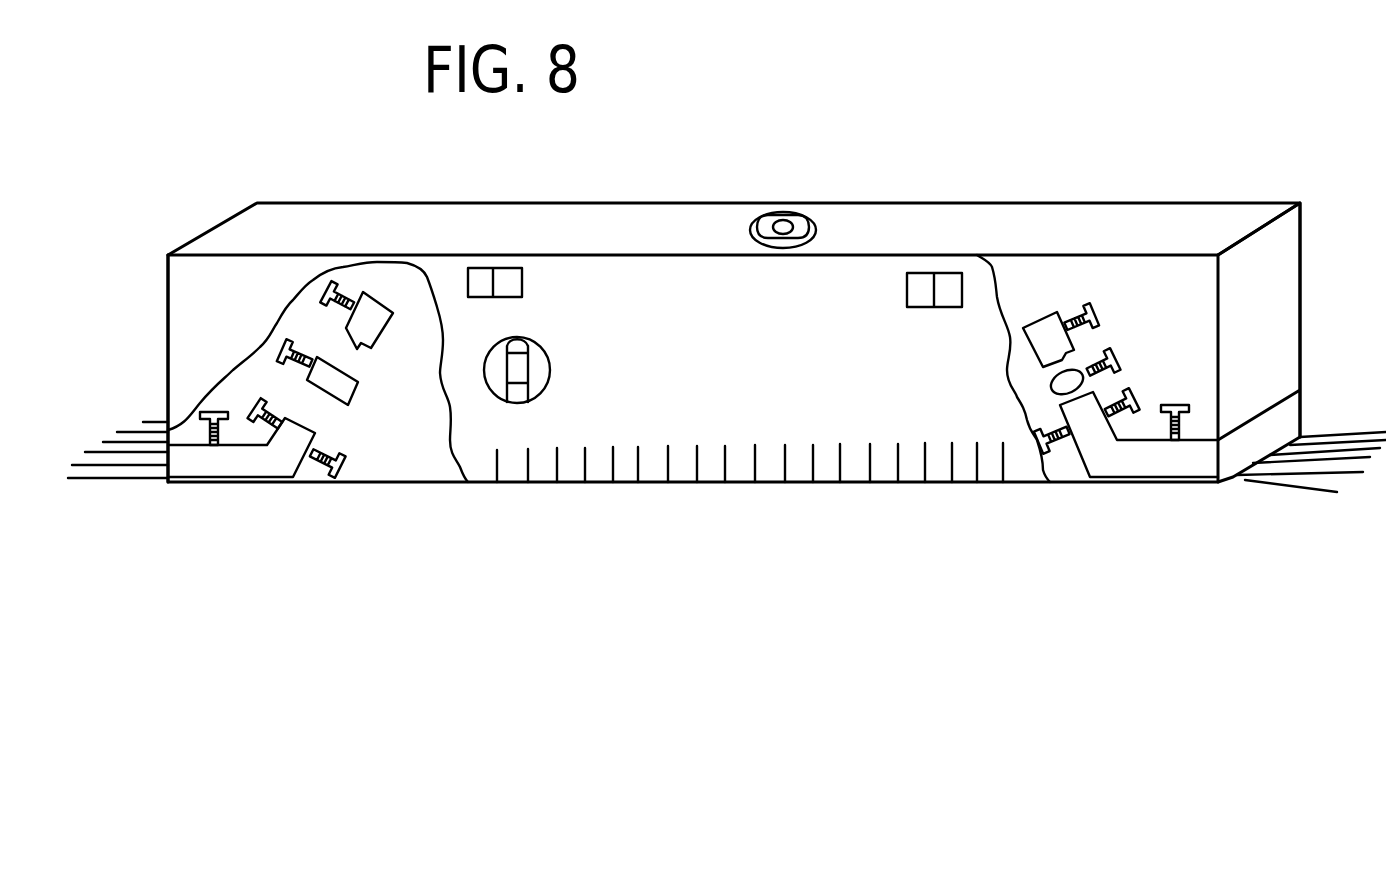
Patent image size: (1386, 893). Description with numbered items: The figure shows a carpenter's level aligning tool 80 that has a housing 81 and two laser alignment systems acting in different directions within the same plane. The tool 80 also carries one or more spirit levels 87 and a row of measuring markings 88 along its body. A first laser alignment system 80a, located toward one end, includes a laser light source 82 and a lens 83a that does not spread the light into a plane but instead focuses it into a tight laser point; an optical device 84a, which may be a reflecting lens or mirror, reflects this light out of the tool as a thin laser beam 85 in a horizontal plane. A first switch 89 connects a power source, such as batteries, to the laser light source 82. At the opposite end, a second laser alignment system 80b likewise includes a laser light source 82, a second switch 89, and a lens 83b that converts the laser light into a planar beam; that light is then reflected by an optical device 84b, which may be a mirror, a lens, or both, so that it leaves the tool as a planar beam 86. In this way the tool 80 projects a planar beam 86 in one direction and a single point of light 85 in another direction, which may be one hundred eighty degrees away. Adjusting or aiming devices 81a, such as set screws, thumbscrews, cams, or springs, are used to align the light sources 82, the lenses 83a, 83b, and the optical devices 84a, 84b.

The carpenter's level aligning tool 80 is at (845, 255).
The first laser alignment system 80a is at (140, 283).
The second laser alignment system 80b is at (1198, 252).
The housing 81 is at (607, 255).
The adjusting or aiming devices 81a is at (1085, 368).
The laser light source 82 is at (365, 290).
The lens 83a is at (322, 372).
The lens 83b is at (1050, 387).
The optical device 84a is at (260, 482).
The optical device 84b is at (1135, 463).
The thin laser beam 85 is at (80, 478).
The planar beam 86 is at (1275, 488).
The spirit level 87 is at (777, 212).
The measuring markings 88 is at (788, 482).
The switch 89 is at (482, 268).